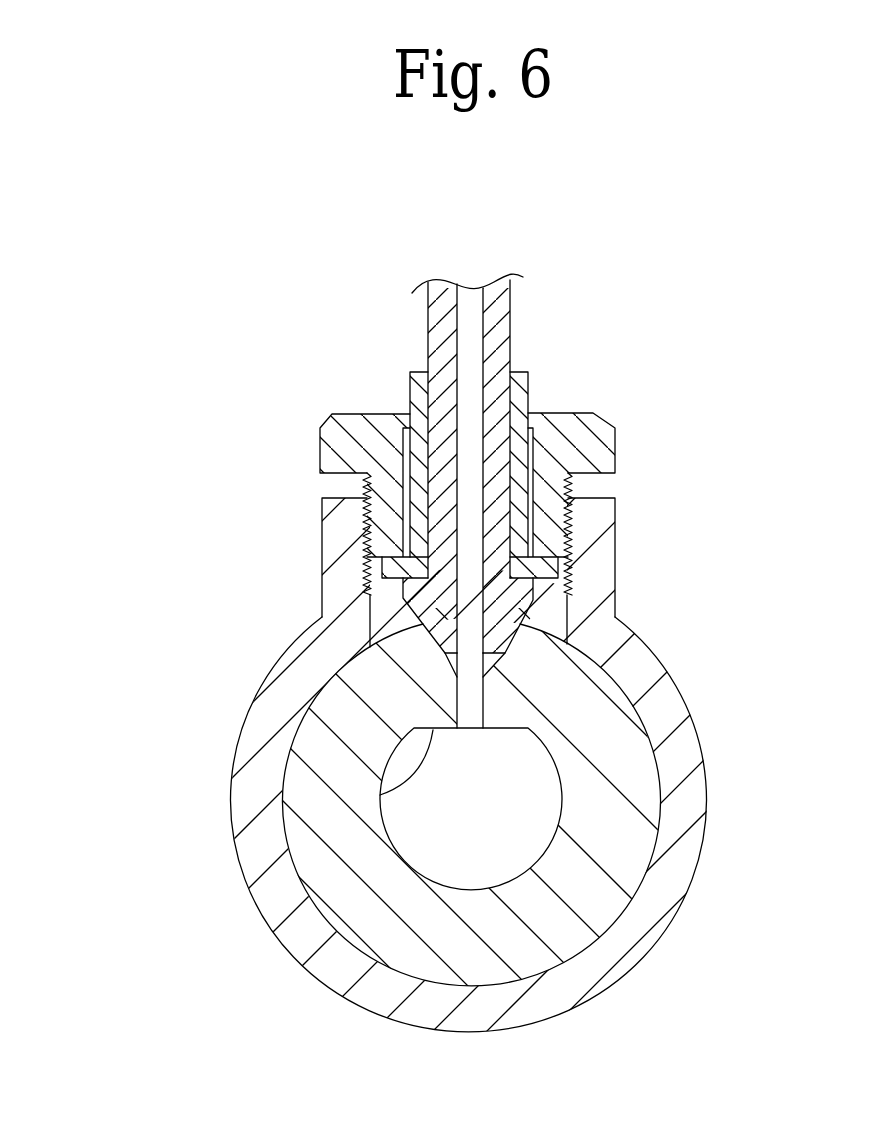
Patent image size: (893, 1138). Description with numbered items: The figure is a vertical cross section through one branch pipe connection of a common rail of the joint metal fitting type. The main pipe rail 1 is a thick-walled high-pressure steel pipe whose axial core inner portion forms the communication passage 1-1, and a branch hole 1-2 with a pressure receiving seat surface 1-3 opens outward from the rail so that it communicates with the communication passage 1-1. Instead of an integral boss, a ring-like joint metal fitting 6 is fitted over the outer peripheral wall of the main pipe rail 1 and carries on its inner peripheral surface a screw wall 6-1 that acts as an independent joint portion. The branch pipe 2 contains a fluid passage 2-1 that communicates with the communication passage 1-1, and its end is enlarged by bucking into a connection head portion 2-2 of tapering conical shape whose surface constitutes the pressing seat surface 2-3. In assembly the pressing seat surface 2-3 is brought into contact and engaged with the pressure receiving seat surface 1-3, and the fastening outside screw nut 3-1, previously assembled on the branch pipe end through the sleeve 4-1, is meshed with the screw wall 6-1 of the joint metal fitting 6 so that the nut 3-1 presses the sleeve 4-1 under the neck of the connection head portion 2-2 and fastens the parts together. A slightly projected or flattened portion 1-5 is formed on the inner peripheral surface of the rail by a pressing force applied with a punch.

The main pipe rail 1 is at (633, 810).
The communication passage 1-1 is at (549, 840).
The branch hole 1-2 is at (472, 707).
The pressure receiving seat surface 1-3 is at (495, 666).
The slightly projected or flattened portion 1-5 is at (380, 795).
The branch pipe 2 is at (500, 328).
The fluid passage 2-1 is at (470, 297).
The connection head portion 2-2 is at (427, 597).
The pressing seat surface 2-3 is at (535, 600).
The fastening outside screw nut 3-1 is at (597, 448).
The sleeve 4-1 is at (520, 388).
The ring-like joint metal fitting 6 is at (690, 748).
The screw wall 6-1 is at (607, 523).